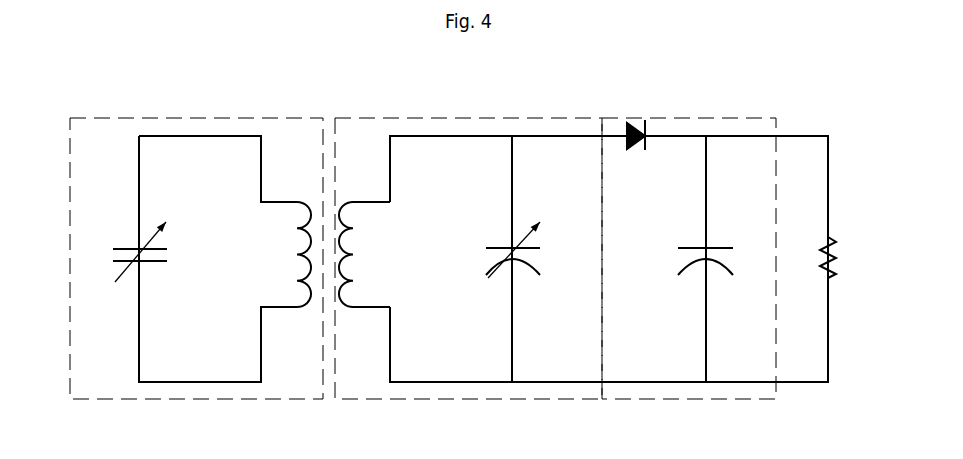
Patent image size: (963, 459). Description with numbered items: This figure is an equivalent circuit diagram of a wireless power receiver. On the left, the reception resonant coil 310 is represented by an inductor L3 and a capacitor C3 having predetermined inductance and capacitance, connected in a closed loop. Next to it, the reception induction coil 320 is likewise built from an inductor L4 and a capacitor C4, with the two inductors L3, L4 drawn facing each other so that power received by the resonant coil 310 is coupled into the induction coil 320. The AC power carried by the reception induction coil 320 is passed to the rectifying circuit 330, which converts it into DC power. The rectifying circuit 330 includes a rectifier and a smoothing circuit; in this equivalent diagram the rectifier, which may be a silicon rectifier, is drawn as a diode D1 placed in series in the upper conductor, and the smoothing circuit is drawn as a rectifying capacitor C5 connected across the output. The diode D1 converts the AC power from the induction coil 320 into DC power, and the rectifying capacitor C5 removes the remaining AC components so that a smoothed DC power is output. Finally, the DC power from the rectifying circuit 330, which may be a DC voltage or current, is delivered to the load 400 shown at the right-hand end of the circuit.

The reception resonant coil 310 is at (226, 117).
The reception induction coil 320 is at (484, 117).
The rectifying circuit 330 is at (707, 117).
The load 400 is at (846, 231).
The capacitor C3 is at (123, 252).
The inductor L3 is at (285, 254).
The inductor L4 is at (368, 254).
The capacitor C4 is at (529, 250).
The rectifying capacitor C5 is at (722, 261).
The diode D1 is at (636, 117).